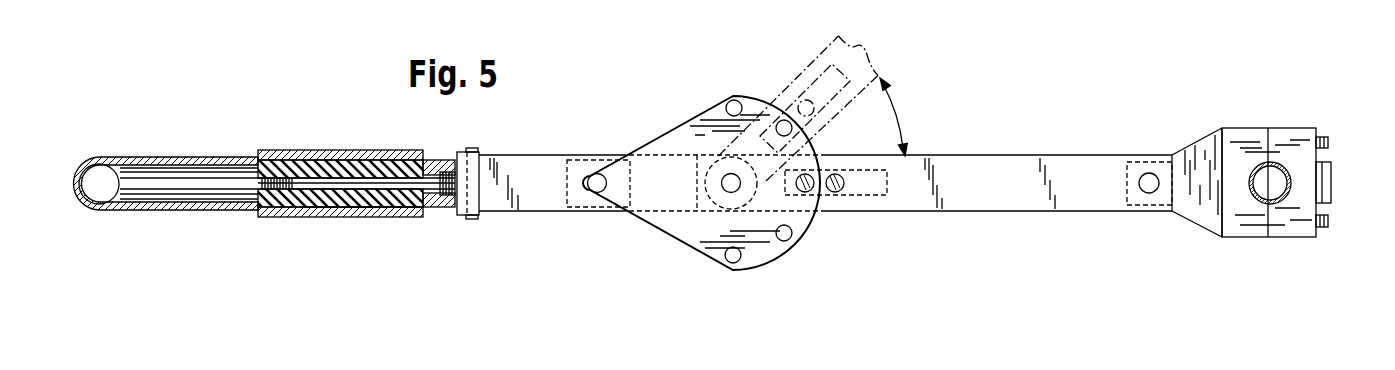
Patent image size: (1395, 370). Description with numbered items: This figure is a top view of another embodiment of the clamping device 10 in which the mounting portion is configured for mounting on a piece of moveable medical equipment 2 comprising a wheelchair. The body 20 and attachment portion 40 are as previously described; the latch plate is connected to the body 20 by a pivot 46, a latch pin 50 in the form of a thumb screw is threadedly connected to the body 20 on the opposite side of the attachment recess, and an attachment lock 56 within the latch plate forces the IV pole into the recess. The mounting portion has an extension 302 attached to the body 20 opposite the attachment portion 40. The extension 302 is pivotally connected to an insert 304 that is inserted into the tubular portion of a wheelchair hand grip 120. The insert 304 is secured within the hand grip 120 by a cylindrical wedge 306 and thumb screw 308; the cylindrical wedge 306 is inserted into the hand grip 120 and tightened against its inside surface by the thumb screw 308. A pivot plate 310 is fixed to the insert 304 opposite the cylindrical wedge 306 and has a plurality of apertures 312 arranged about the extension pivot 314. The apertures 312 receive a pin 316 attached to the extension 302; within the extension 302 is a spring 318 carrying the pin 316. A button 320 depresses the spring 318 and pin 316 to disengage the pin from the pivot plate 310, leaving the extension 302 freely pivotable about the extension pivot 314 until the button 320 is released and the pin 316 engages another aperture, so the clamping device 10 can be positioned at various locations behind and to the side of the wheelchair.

The moveable medical equipment 2 is at (235, 156).
The cylindrical wedge 306 is at (347, 150).
The hand grip 120 is at (365, 217).
The thumb screw 308 is at (448, 160).
The insert 304 is at (540, 212).
The pivot plate 310 is at (660, 136).
The apertures 312 is at (731, 100).
The extension pivot 314 is at (722, 188).
The pin 316 is at (808, 192).
The button 320 is at (845, 184).
The spring 318 is at (888, 191).
The extension 302 is at (978, 155).
The clamping device 10 is at (1294, 97).
The body 20 is at (1256, 127).
The attachment portion 40 is at (1283, 238).
The latch pin 50 is at (1327, 140).
The attachment lock 56 is at (1333, 178).
The pivot 46 is at (1328, 227).